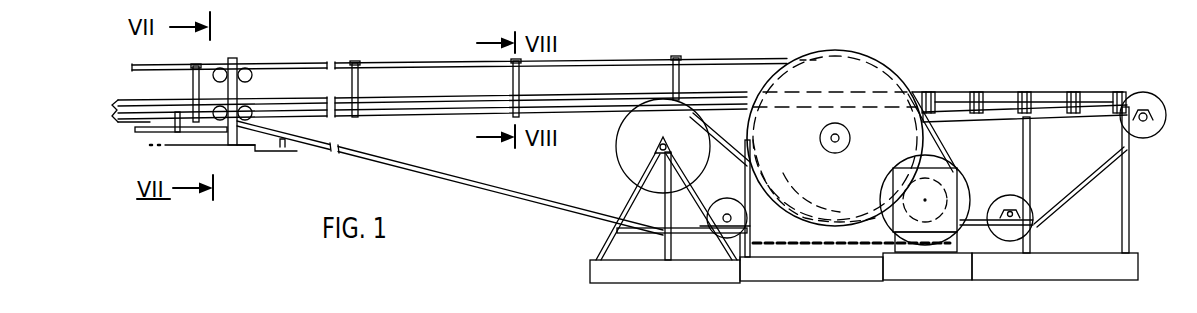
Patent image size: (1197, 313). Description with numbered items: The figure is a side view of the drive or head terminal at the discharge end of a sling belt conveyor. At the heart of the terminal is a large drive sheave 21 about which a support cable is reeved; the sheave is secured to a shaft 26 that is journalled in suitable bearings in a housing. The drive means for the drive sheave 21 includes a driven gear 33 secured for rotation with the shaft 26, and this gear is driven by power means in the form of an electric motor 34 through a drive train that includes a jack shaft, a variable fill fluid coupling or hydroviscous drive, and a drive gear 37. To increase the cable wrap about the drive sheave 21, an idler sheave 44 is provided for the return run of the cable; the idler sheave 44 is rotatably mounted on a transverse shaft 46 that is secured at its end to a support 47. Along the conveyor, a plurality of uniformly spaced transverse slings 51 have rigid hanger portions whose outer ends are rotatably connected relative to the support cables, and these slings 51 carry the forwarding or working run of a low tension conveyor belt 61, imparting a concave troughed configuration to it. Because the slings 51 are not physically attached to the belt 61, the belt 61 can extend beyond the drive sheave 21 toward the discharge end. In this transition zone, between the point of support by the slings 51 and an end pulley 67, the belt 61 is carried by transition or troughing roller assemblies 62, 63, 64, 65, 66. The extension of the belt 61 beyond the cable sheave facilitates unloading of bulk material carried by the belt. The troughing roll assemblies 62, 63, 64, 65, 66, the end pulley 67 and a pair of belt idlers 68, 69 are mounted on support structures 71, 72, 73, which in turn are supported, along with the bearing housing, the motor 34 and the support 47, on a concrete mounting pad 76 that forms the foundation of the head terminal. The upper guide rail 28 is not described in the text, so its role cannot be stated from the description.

The drive sheave 21 is at (870, 62).
The shaft 26 is at (850, 137).
The upper guide rail 28 is at (647, 49).
The driven gear 33 is at (814, 189).
The electric motor 34 is at (960, 168).
The drive gear 37 is at (890, 227).
The idler sheave 44 is at (617, 153).
The transverse shaft 46 is at (663, 137).
The support 47 is at (638, 193).
The transverse slings 51 is at (193, 80).
The low tension conveyor belt 61 is at (437, 168).
The transition or troughing roller assembly 62 is at (926, 90).
The transition or troughing roller assembly 63 is at (975, 90).
The transition or troughing roller assembly 64 is at (1023, 90).
The transition or troughing roller assembly 65 is at (1071, 90).
The transition or troughing roller assembly 66 is at (1118, 90).
The end pulley 67 is at (1151, 98).
The belt idler 68 is at (1014, 200).
The belt idler 69 is at (725, 198).
The support structure 71 is at (1062, 115).
The support structure 72 is at (983, 212).
The support structure 73 is at (682, 243).
The concrete mounting pad 76 is at (603, 268).